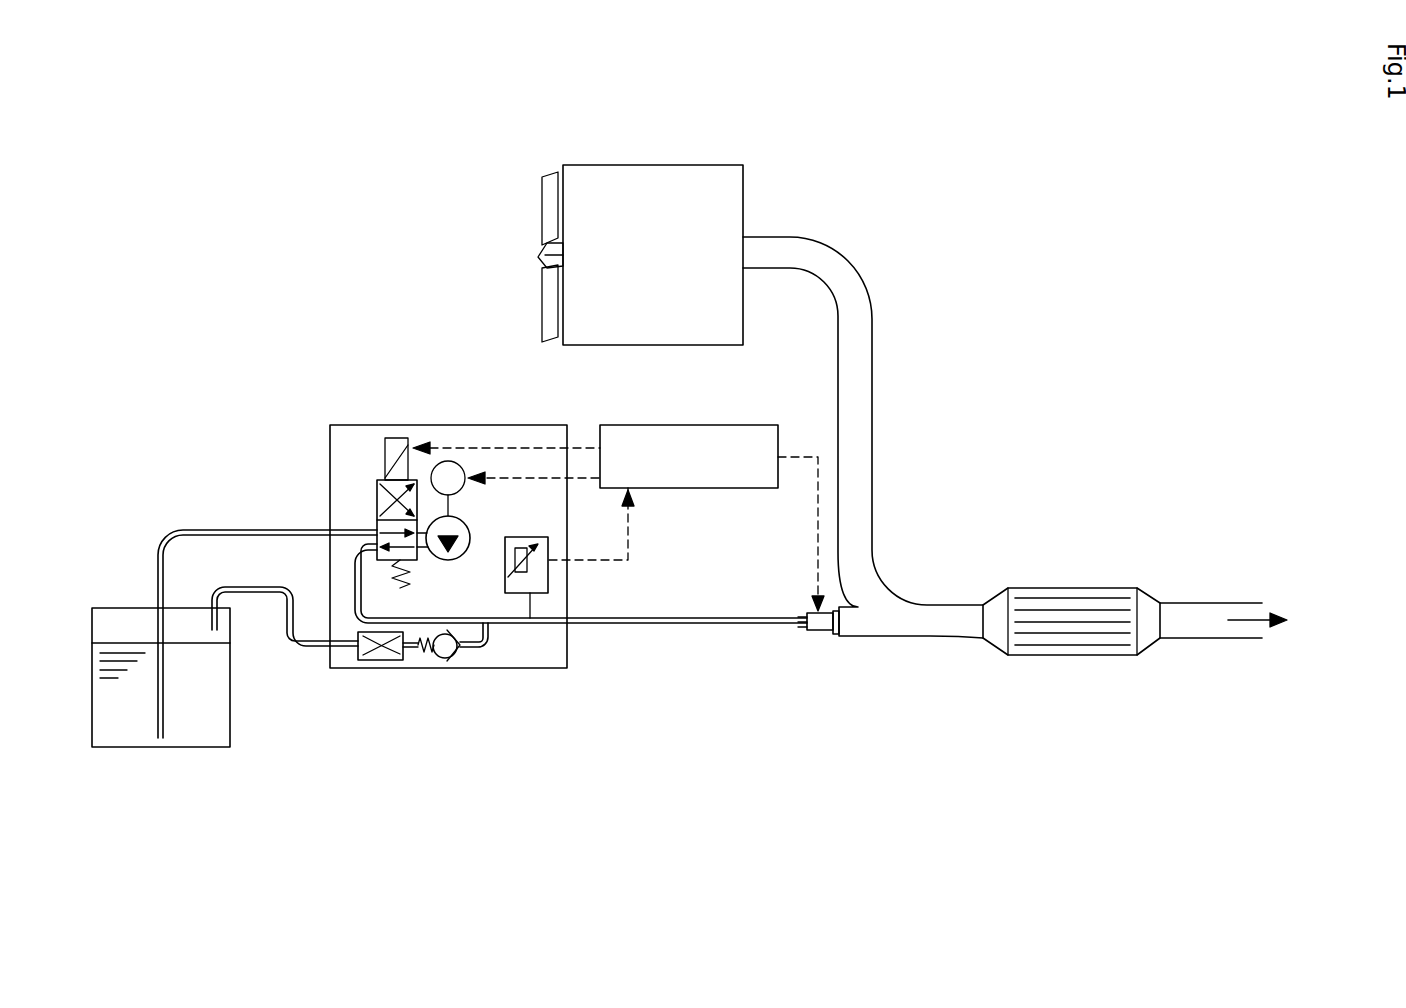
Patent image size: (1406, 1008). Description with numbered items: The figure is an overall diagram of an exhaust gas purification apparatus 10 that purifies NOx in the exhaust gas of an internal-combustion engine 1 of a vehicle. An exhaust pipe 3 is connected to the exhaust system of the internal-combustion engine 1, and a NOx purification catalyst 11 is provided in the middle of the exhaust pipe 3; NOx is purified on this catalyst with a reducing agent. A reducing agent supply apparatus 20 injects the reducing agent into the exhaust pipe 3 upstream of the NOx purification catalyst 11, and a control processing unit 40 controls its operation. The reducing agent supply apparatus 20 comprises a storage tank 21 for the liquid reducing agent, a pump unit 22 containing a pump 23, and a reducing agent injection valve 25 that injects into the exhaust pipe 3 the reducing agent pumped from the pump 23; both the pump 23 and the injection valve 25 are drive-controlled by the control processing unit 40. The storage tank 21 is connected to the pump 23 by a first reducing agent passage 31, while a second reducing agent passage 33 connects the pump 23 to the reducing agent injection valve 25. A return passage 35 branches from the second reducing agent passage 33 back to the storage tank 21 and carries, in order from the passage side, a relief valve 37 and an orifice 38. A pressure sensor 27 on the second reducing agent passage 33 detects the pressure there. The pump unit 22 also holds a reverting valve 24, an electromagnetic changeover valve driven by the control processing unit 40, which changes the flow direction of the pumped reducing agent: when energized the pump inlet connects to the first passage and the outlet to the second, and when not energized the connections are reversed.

The internal-combustion engine 1 is at (743, 197).
The exhaust pipe 3 is at (872, 508).
The exhaust gas purification apparatus 10 is at (1100, 331).
The NOx purification catalyst 11 is at (1077, 595).
The reducing agent supply apparatus 20 is at (281, 374).
The storage tank 21 is at (230, 725).
The pump unit 22 is at (360, 425).
The pump 23 is at (470, 523).
The reverting valve 24 is at (377, 505).
The reducing agent injection valve 25 is at (822, 635).
The pressure sensor 27 is at (548, 583).
The first reducing agent passage 31 is at (217, 528).
The second reducing agent passage 33 is at (633, 625).
The return passage 35 is at (308, 650).
The relief valve 37 is at (442, 658).
The orifice 38 is at (382, 660).
The control processing unit 40 is at (693, 423).